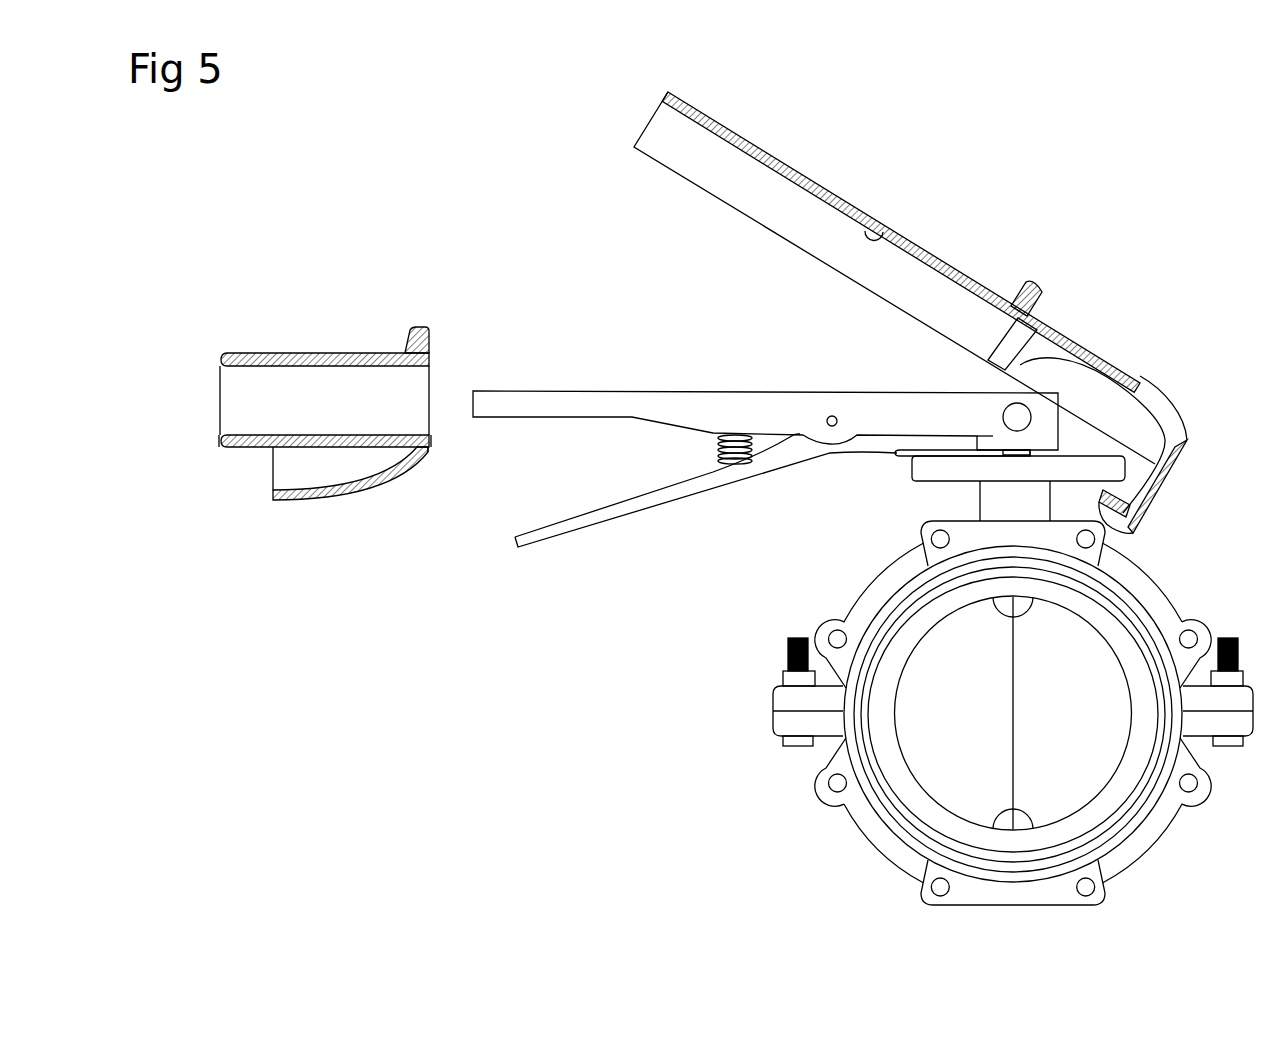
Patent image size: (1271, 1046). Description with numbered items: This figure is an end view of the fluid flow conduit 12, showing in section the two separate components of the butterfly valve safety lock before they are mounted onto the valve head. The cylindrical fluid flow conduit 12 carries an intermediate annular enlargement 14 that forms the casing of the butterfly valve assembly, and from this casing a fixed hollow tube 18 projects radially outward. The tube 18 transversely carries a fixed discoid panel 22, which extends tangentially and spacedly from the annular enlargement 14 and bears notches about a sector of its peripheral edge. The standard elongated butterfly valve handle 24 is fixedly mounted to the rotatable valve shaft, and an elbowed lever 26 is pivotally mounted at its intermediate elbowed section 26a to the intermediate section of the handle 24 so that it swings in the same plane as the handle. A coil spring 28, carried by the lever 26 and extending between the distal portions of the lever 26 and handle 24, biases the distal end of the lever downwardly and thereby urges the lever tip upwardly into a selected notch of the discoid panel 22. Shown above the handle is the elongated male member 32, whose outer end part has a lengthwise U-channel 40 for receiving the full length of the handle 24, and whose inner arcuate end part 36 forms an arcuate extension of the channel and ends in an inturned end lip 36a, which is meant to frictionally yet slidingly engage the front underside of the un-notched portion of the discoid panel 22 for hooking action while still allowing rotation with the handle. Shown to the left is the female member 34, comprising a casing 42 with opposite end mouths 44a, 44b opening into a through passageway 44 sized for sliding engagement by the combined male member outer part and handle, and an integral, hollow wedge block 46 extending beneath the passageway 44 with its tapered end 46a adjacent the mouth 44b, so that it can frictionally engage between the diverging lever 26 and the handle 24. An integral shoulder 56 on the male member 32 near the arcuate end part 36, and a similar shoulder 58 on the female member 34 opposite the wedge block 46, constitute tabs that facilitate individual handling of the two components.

The fluid flow conduit 12 is at (1000, 724).
The annular enlargement 14 is at (878, 595).
The fixed hollow tube 18 is at (980, 504).
The discoid panel 22 is at (912, 462).
The butterfly valve handle 24 is at (765, 389).
The elbowed lever 26 is at (575, 527).
The intermediate elbowed section 26a is at (833, 413).
The coil spring 28 is at (720, 458).
The male member 32 is at (952, 331).
The female member 34 is at (322, 422).
The inner arcuate end part 36 is at (1178, 478).
The inturned end lip 36a is at (1120, 520).
The U-channel 40 is at (876, 231).
The casing 42 is at (308, 353).
The through passageway 44 is at (351, 413).
The end mouth 44a is at (217, 436).
The end mouth 44b is at (430, 439).
The wedge block 46 is at (331, 470).
The tapered end 46a is at (428, 462).
The shoulder 56 is at (1025, 286).
The shoulder 58 is at (428, 338).